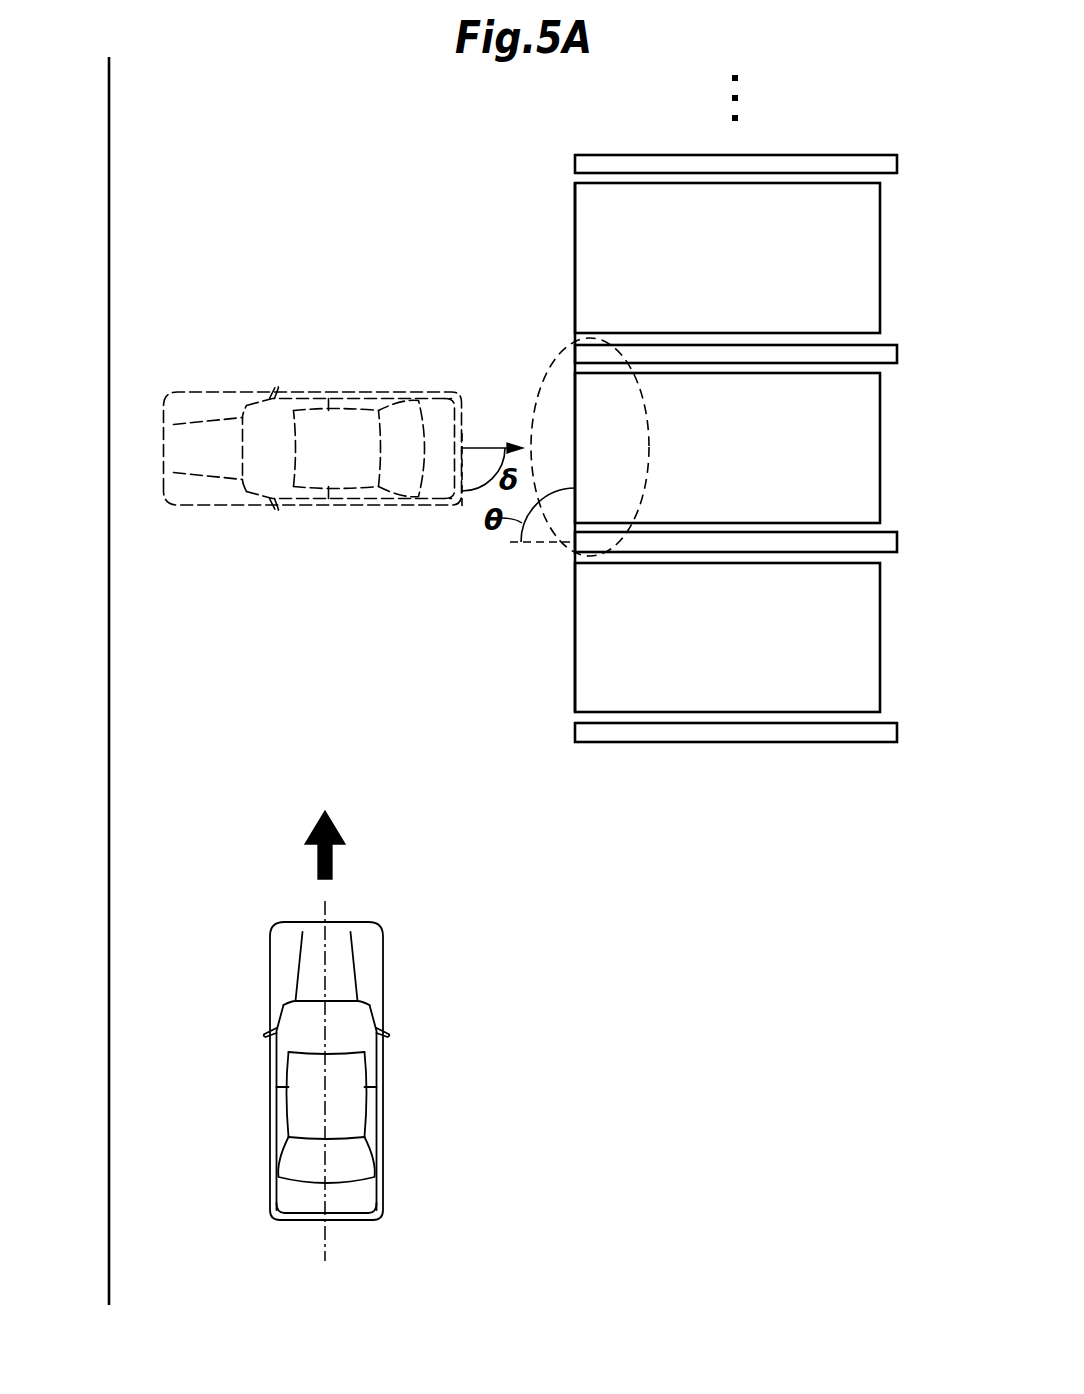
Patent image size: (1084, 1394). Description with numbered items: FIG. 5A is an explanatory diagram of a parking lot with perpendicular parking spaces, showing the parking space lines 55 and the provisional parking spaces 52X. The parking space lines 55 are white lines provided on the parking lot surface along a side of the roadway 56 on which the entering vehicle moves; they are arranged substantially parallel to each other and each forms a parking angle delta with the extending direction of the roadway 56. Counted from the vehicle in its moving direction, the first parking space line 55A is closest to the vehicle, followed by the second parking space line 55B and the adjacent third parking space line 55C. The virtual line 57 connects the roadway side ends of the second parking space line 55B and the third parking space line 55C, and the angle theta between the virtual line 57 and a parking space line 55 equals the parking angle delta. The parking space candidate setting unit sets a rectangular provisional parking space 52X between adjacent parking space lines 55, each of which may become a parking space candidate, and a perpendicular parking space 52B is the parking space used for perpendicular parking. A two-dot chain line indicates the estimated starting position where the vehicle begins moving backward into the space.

The parking space line 55 is at (815, 160).
The first parking space line 55A is at (632, 736).
The second parking space line 55B is at (638, 542).
The third parking space line 55C is at (585, 348).
The provisional parking space 52X is at (880, 227).
The perpendicular parking space 52B is at (905, 439).
The roadway 56 is at (169, 716).
The virtual line 57 is at (575, 403).